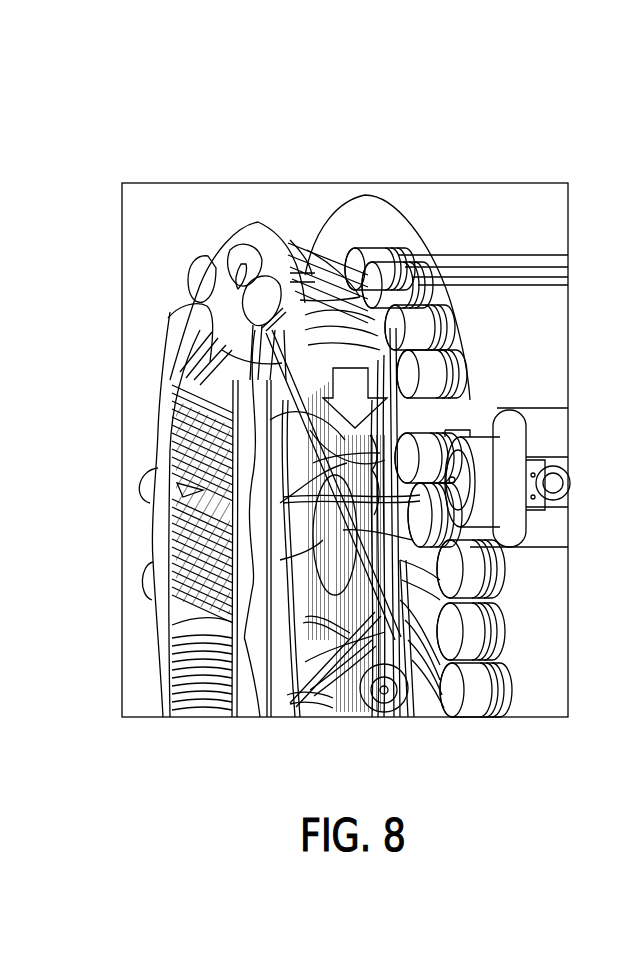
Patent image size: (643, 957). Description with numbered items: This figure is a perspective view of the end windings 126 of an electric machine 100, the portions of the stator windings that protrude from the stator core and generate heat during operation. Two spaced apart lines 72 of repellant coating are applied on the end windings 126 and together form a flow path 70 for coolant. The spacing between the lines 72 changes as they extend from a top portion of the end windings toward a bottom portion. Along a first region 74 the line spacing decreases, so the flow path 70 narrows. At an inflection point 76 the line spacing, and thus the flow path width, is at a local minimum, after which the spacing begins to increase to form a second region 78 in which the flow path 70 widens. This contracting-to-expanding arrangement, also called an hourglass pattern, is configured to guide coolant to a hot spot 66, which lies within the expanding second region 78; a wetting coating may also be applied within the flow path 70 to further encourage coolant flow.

The electric machine 100 is at (402, 129).
The lines of repellant coating 72 is at (222, 350).
The first region 74 is at (392, 436).
The flow path 70 is at (398, 450).
The inflection point 76 is at (402, 533).
The second region 78 is at (350, 650).
The hot spot 66 is at (386, 699).
The end windings 126 is at (440, 703).